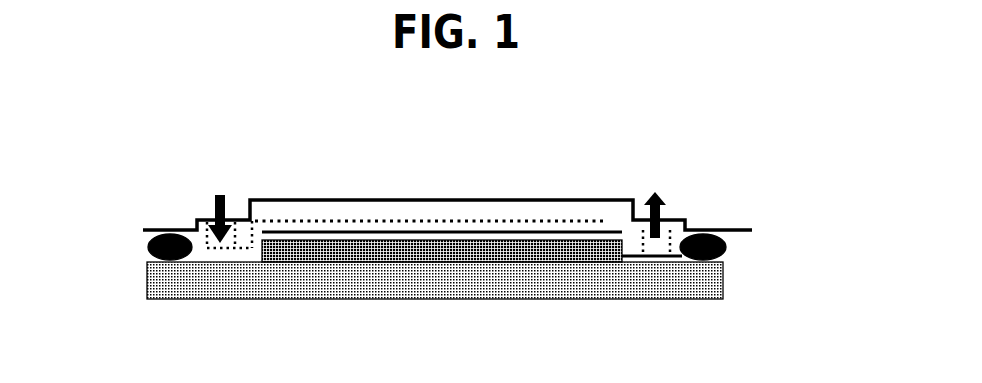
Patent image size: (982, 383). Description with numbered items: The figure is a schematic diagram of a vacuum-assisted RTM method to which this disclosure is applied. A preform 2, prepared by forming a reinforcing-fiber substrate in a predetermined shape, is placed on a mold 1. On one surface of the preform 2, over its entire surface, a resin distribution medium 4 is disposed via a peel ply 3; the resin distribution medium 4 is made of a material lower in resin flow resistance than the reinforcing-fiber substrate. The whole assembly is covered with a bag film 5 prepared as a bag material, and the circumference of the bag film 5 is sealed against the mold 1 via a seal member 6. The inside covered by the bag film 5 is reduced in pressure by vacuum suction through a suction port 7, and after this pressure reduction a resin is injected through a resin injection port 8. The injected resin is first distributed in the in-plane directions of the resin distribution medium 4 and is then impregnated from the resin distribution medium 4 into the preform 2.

The mold 1 is at (345, 277).
The preform 2 is at (533, 250).
The peel ply 3 is at (557, 228).
The resin distribution medium 4 is at (407, 213).
The bag film 5 is at (438, 197).
The seal member 6 is at (726, 247).
The suction port 7 is at (662, 249).
The resin injection port 8 is at (227, 243).